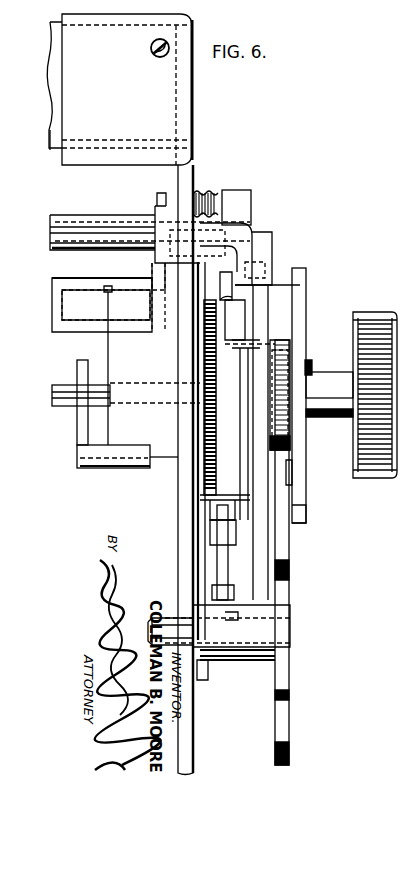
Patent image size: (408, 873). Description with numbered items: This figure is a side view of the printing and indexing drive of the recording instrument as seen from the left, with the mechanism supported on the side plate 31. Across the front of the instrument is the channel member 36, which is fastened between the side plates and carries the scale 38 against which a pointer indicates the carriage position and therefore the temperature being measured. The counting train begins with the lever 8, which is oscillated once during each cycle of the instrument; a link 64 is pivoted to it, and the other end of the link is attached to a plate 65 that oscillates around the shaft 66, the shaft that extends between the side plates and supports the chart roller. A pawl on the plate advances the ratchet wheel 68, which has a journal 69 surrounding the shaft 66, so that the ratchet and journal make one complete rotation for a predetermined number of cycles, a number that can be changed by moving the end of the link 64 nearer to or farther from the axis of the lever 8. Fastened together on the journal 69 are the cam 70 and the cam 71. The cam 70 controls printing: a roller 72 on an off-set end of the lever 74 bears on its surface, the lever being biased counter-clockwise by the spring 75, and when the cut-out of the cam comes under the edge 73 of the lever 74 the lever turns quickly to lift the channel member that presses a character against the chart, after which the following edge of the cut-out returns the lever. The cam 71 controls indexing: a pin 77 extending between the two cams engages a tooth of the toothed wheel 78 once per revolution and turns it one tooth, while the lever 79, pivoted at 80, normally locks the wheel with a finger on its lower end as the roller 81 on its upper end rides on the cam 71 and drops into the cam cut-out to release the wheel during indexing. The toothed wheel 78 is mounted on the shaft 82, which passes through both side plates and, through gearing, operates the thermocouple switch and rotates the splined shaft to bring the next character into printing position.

The lever 8 is at (200, 553).
The side plate 31 is at (184, 180).
The channel member 36 is at (54, 127).
The scale 38 is at (158, 127).
The link 64 is at (220, 564).
The plate 65 is at (216, 505).
The shaft 66 is at (310, 383).
The ratchet wheel 68 is at (206, 440).
The journal 69 is at (258, 346).
The cam 70 is at (262, 320).
The cam 71 is at (298, 279).
The roller 72 is at (262, 244).
The edge 73 is at (270, 278).
The lever 74 is at (160, 200).
The spring 75 is at (207, 195).
The pin 77 is at (299, 525).
The toothed wheel 78 is at (283, 663).
The lever 79 is at (282, 448).
The pivot 80 is at (293, 472).
The roller 81 is at (309, 360).
The shaft 82 is at (270, 618).